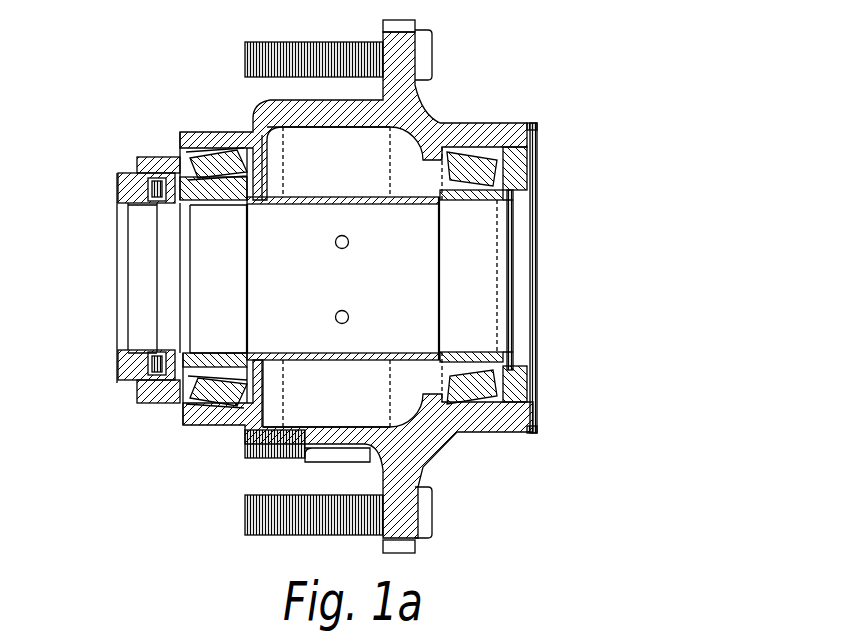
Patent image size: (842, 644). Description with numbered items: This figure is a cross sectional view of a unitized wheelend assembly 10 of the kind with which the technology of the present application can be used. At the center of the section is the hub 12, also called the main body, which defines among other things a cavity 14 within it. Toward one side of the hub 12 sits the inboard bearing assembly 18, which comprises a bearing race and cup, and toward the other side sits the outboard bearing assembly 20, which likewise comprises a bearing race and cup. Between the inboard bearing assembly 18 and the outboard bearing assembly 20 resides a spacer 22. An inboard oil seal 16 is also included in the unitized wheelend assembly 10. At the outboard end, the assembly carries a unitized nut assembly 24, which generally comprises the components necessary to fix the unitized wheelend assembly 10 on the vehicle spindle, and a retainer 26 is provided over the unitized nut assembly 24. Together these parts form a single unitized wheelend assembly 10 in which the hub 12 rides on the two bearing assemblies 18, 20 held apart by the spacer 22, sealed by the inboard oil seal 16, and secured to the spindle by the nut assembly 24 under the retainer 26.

The unitized wheelend assembly 10 is at (586, 76).
The hub 12 is at (405, 140).
The cavity 14 is at (353, 400).
The inboard oil seal 16 is at (537, 160).
The inboard bearing assembly 18 is at (483, 143).
The outboard bearing assembly 20 is at (215, 175).
The spacer 22 is at (400, 322).
The unitized nut assembly 24 is at (143, 381).
The retainer 26 is at (118, 340).